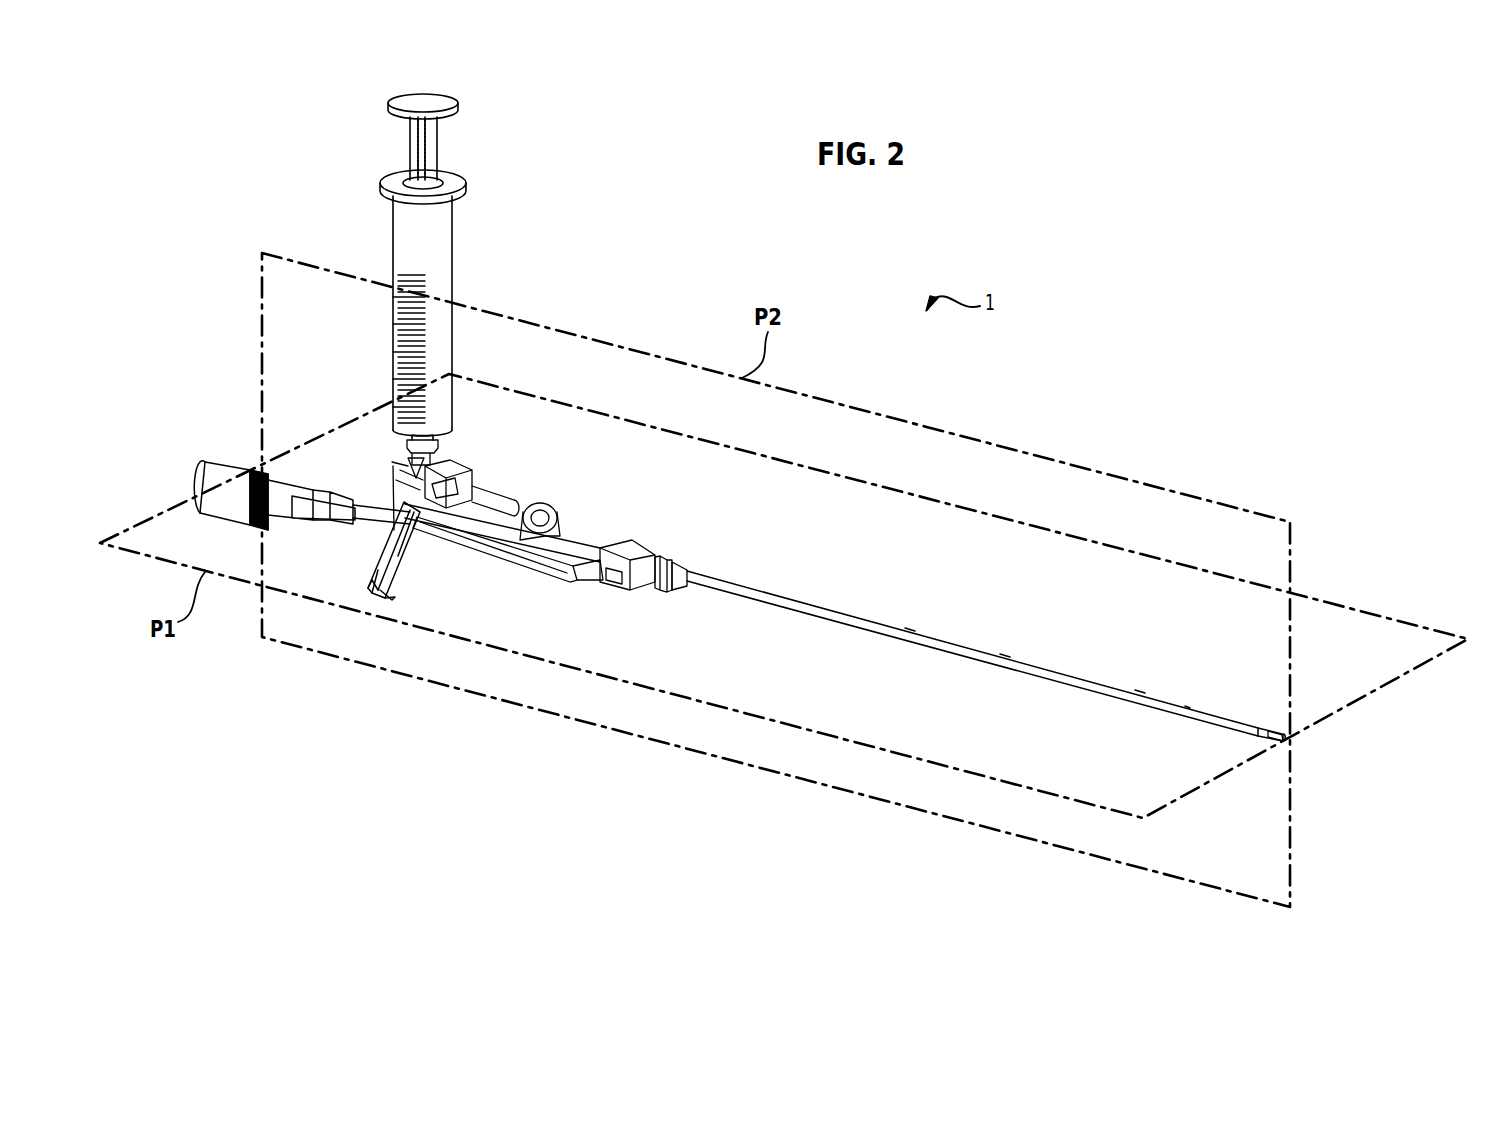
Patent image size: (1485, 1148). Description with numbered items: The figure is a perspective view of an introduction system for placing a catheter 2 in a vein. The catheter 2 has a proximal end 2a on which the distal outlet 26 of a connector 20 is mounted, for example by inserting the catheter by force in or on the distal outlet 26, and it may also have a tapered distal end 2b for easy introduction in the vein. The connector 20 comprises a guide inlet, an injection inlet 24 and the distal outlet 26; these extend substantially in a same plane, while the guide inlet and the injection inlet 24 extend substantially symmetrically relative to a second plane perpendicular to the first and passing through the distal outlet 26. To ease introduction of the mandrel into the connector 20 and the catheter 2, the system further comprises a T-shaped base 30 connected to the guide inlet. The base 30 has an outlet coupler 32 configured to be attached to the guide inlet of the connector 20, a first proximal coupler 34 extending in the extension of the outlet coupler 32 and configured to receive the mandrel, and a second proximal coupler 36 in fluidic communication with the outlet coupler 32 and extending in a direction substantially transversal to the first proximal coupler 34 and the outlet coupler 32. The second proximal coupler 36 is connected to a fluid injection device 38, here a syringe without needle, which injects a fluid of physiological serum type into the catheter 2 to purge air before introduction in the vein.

The catheter 2 is at (935, 638).
The proximal end of the catheter 2a is at (695, 575).
The tapered distal end 2b is at (1278, 732).
The connector 20 is at (640, 560).
The injection inlet 24 is at (590, 572).
The distal outlet 26 is at (672, 565).
The base 30 is at (475, 487).
The outlet coupler 32 is at (495, 493).
The first proximal coupler 34 is at (398, 476).
The second proximal coupler 36 is at (440, 456).
The fluid injection device 38 is at (432, 252).